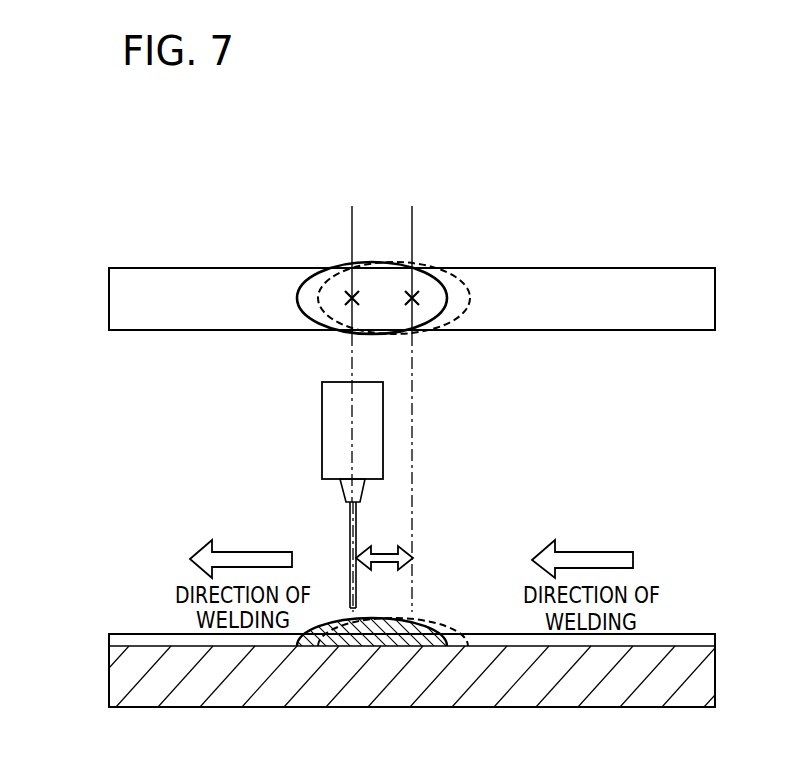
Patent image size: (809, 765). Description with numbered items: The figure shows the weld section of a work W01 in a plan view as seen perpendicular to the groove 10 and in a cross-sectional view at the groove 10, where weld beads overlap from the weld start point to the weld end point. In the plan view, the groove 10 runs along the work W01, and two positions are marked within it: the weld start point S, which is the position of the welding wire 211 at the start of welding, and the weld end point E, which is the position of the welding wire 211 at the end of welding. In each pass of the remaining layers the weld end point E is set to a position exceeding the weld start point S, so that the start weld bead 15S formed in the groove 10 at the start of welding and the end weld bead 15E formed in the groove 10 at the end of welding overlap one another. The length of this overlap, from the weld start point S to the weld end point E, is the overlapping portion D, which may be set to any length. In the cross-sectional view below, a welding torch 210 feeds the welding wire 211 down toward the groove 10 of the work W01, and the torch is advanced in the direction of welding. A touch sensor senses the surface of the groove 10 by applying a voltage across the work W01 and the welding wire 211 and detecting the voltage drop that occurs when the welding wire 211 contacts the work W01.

The groove 10 is at (702, 298).
The end weld bead 15E is at (298, 298).
The start weld bead 15S is at (470, 298).
The weld end point E is at (353, 292).
The weld start point S is at (420, 298).
The welding torch 210 is at (373, 430).
The welding wire 211 is at (357, 525).
The overlapping portion D is at (384, 572).
The work W01 is at (702, 678).